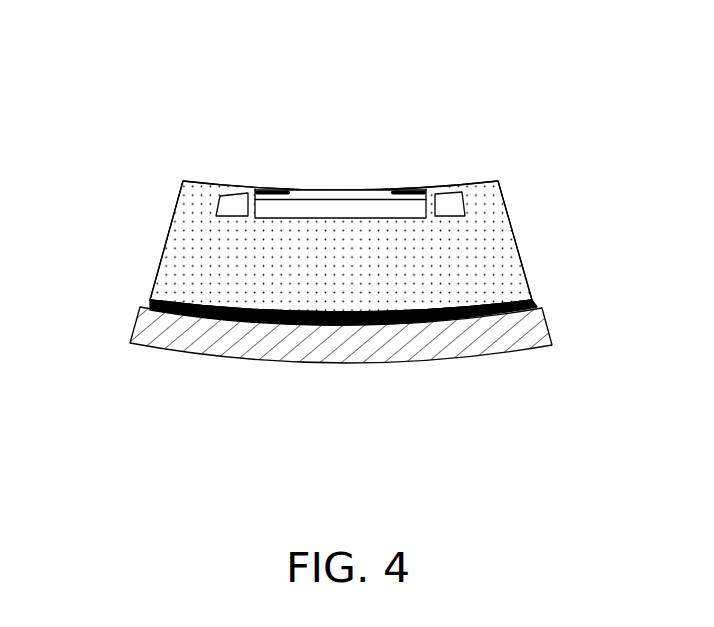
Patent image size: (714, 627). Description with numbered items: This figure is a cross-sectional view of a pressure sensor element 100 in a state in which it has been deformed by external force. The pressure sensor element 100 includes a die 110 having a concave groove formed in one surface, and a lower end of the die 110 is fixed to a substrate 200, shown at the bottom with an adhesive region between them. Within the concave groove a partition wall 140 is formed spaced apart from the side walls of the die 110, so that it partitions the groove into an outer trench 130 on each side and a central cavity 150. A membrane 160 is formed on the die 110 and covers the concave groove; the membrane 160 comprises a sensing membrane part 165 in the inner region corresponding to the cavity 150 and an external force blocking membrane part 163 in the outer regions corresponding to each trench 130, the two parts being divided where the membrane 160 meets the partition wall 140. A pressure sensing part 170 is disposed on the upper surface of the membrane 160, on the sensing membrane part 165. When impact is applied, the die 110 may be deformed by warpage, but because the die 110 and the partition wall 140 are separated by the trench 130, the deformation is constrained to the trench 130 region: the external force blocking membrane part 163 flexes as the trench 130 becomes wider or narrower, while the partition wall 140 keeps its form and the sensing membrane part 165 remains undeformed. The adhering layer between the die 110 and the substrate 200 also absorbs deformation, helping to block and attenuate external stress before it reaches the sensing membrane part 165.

The pressure sensor element 100 is at (344, 229).
The die 110 is at (500, 267).
The trench 130 is at (455, 205).
The partition wall 140 is at (259, 213).
The cavity 150 is at (338, 207).
The membrane 160 is at (343, 229).
The external force blocking membrane part 163 is at (220, 188).
The sensing membrane part 165 is at (356, 252).
The pressure sensing part 170 is at (418, 203).
The substrate 200 is at (130, 320).